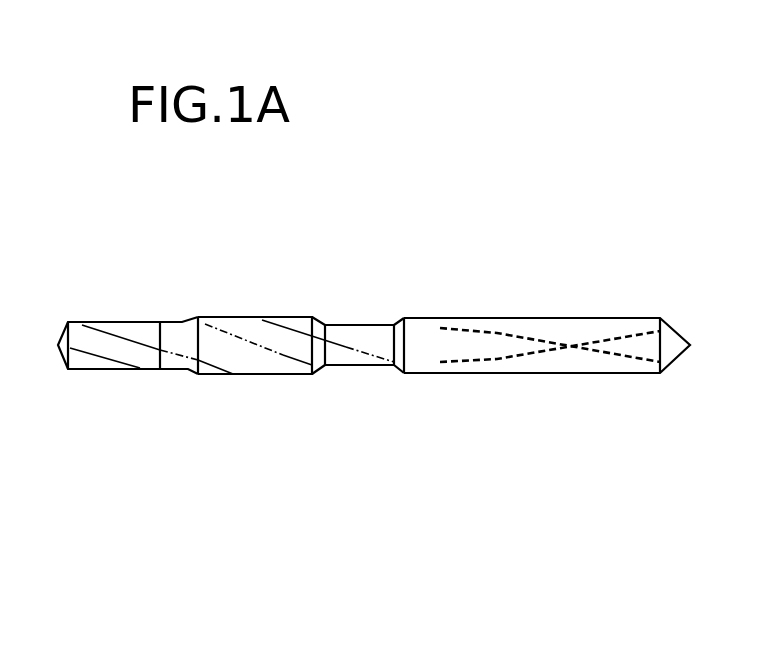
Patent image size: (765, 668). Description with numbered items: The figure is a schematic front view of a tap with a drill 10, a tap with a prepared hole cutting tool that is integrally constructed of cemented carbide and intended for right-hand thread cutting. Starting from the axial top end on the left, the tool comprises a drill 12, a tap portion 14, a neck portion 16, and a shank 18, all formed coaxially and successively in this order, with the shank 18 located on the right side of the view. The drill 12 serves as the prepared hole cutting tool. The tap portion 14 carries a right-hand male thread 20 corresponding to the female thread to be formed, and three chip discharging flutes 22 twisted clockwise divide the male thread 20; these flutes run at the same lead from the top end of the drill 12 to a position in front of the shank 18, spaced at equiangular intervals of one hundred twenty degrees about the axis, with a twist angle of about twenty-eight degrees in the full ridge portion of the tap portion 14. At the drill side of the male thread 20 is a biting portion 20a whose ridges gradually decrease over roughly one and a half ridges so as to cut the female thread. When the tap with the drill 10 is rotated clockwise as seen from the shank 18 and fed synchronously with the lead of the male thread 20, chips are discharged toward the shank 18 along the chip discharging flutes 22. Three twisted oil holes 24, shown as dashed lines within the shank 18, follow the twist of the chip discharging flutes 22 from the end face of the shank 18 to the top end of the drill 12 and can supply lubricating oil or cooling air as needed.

The tap with a drill 10 is at (505, 250).
The drill 12 is at (110, 352).
The tap portion 14 is at (213, 418).
The neck portion 16 is at (348, 362).
The shank 18 is at (557, 365).
The male thread 20 is at (254, 334).
The biting portion 20a is at (177, 360).
The chip discharging flutes 22 is at (133, 337).
The oil holes 24 is at (477, 328).